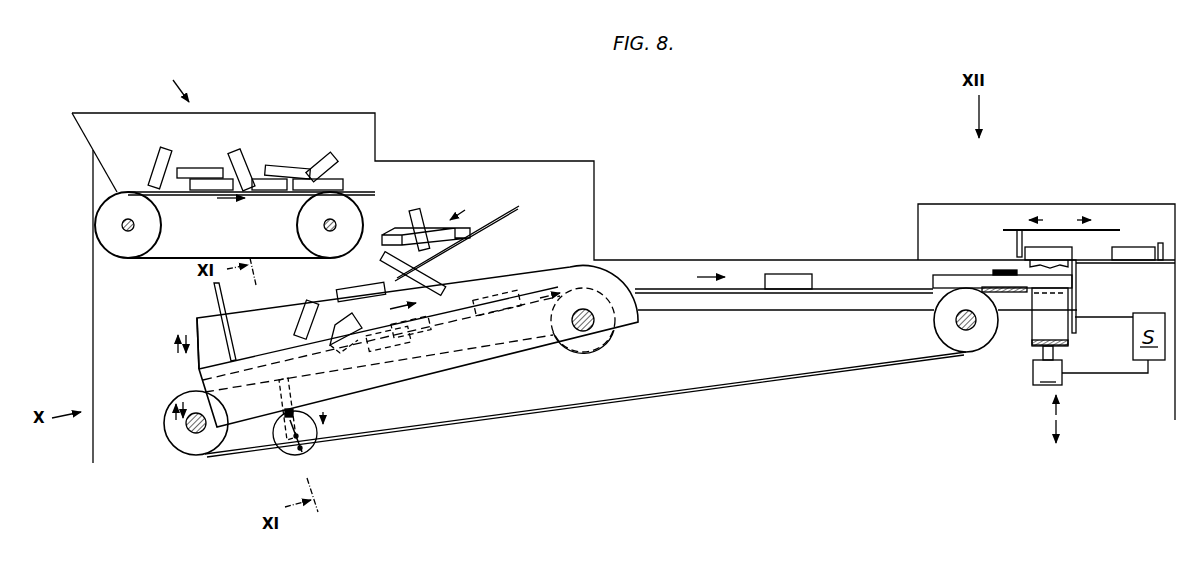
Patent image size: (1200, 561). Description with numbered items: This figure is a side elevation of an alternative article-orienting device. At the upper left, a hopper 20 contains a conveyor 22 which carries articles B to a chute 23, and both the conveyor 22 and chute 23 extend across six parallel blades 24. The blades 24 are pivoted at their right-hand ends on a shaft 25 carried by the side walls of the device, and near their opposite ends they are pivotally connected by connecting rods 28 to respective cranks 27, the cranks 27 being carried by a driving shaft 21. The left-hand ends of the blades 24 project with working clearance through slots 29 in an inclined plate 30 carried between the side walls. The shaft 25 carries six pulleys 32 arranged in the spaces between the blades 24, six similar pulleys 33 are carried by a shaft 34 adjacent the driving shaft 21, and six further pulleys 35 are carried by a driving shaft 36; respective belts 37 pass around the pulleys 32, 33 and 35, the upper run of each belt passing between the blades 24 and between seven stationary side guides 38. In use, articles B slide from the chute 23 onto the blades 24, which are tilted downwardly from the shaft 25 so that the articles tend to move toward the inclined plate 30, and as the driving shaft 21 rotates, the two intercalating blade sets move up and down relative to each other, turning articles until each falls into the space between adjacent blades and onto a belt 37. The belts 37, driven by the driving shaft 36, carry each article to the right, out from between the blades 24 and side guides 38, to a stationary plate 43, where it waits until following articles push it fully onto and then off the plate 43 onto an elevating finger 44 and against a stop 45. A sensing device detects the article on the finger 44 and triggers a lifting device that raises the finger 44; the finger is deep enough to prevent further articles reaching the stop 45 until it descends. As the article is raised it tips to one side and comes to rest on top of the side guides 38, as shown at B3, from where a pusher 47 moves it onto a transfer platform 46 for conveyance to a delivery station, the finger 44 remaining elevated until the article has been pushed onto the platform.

The hopper 20 is at (88, 125).
The conveyor 22 is at (257, 190).
The articles B is at (313, 160).
The chute 23 is at (497, 208).
The blades 24 is at (505, 266).
The shaft 25 is at (589, 331).
The cranks 27 is at (276, 458).
The connecting rods 28 is at (305, 414).
The slots 29 is at (223, 313).
The inclined plate 30 is at (213, 288).
The driving shaft 21 is at (312, 442).
The pulleys 32 is at (611, 333).
The pulleys 33 is at (193, 447).
The shaft 34 is at (185, 428).
The pulleys 35 is at (968, 343).
The driving shaft 36 is at (955, 319).
The belts 37 is at (718, 382).
The side guides 38 is at (718, 262).
The stationary plate 43 is at (1013, 293).
The elevating finger 44 is at (1060, 333).
The stop 45 is at (1077, 278).
The transfer platform 46 is at (1155, 263).
The pusher 47 is at (1018, 243).
The article B3 is at (1057, 248).